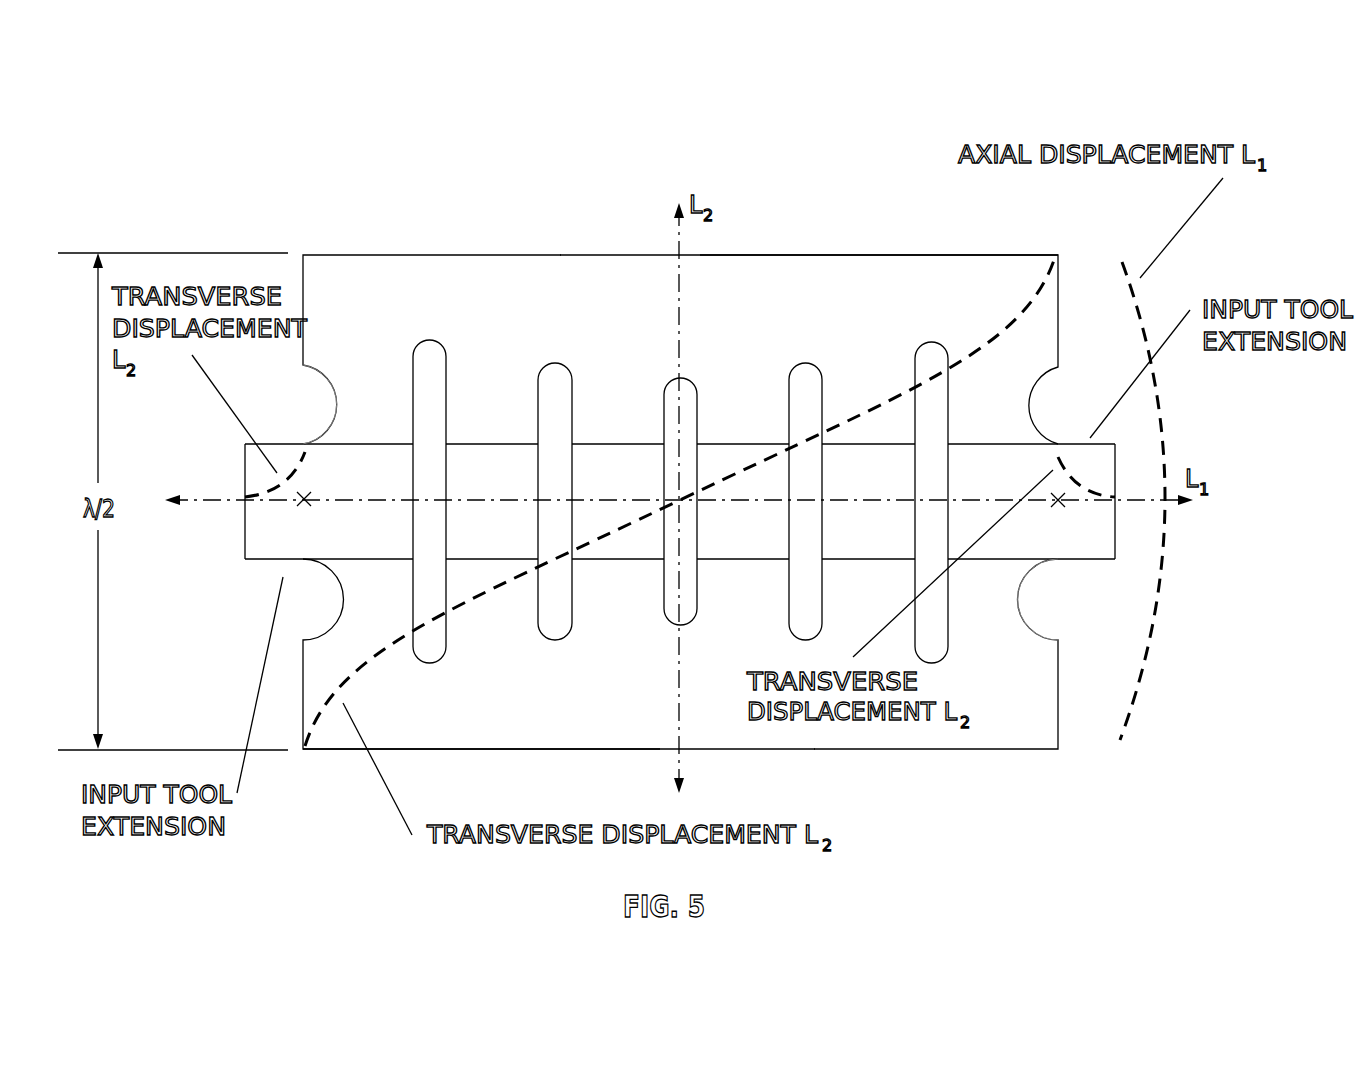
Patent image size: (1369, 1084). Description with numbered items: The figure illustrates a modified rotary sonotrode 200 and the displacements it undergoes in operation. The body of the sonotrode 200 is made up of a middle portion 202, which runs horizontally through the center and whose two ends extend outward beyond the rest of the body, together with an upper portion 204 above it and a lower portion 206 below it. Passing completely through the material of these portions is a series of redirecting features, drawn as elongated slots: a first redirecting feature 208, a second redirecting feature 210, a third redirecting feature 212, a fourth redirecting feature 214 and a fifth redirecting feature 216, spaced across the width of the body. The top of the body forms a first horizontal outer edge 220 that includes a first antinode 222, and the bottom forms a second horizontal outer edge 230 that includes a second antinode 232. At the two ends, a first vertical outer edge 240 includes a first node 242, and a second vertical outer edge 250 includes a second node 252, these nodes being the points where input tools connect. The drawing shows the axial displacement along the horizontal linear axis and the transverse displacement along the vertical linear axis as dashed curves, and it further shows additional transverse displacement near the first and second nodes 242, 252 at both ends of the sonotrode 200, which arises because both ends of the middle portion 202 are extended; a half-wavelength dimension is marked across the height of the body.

The modified sonotrode 200 is at (212, 194).
The middle portion 202 is at (355, 544).
The upper portion 204 is at (442, 304).
The lower portion 206 is at (517, 696).
The first redirecting feature 208 is at (412, 392).
The second redirecting feature 210 is at (542, 372).
The third redirecting feature 212 is at (692, 380).
The slot 214 is at (820, 370).
The fifth redirecting feature 216 is at (938, 347).
The first horizontal outer edge 220 is at (842, 253).
The first antinode 222 is at (558, 240).
The second horizontal outer edge 230 is at (502, 753).
The second antinode 232 is at (815, 760).
The first vertical outer edge 240 is at (323, 413).
The first node 242 is at (298, 507).
The second vertical outer edge 250 is at (1037, 605).
The second node 252 is at (1073, 517).